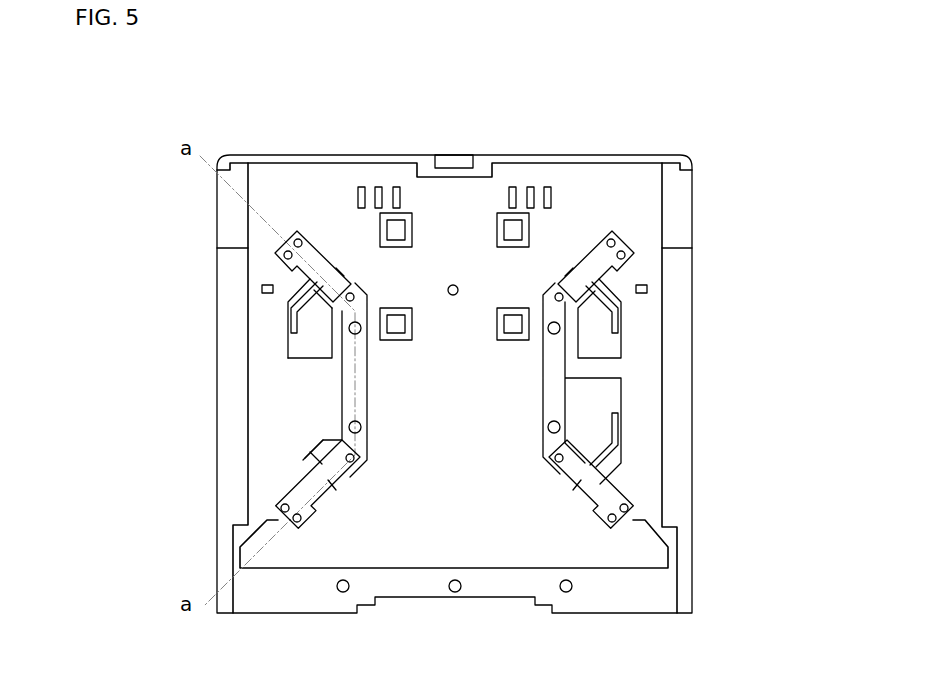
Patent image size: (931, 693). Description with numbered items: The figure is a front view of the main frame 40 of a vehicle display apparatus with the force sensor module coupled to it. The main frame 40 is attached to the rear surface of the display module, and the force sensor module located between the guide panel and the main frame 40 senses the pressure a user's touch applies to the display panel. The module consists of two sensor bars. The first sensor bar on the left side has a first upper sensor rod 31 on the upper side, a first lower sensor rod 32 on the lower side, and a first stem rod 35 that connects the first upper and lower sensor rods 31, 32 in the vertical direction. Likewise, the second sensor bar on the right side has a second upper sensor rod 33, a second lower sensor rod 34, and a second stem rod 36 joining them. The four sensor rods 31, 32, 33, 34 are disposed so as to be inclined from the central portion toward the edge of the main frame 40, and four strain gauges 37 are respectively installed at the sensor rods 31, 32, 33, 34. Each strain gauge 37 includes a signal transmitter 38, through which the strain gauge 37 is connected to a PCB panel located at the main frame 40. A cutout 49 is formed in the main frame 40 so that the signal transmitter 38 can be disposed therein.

The first upper sensor rod 31 is at (300, 273).
The first lower sensor rod 32 is at (290, 480).
The second upper sensor rod 33 is at (611, 273).
The second lower sensor rod 34 is at (620, 481).
The first stem rod 35 is at (340, 390).
The second stem rod 36 is at (560, 390).
The strain gauge 37 is at (340, 274).
The signal transmitter 38 is at (297, 322).
The main frame 40 is at (443, 150).
The cutout 49 is at (310, 355).